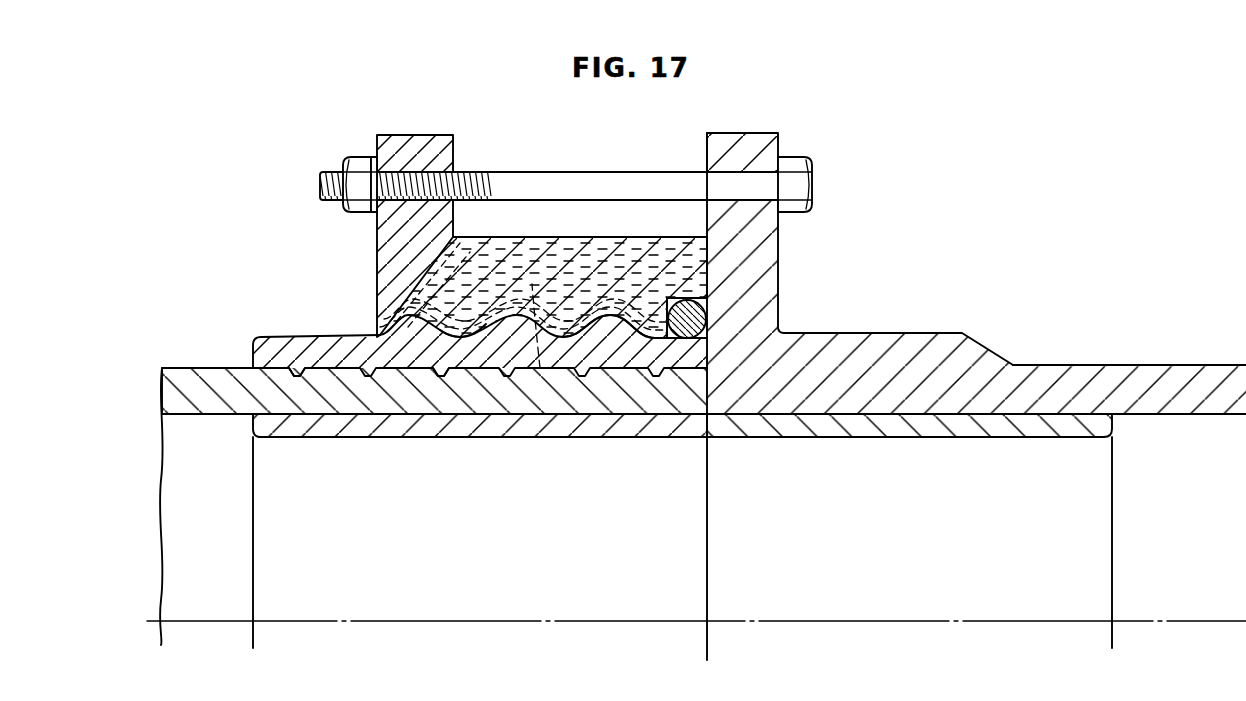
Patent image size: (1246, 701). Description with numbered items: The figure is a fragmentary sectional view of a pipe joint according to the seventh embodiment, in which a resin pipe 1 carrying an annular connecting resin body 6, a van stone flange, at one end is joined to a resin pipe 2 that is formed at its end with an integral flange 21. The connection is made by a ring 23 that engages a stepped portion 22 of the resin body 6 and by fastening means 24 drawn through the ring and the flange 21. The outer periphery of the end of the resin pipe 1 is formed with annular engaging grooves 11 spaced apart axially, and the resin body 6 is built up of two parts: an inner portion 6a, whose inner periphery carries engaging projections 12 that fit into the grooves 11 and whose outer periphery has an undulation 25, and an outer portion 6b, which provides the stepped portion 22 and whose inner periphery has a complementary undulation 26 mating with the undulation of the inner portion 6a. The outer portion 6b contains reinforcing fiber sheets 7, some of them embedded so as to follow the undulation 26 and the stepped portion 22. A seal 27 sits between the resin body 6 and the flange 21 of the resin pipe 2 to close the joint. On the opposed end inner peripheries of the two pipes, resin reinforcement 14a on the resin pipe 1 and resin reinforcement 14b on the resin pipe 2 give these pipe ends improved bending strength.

The resin pipe 1 is at (187, 385).
The resin pipe 2 is at (1182, 392).
The connecting resin body 6 is at (290, 248).
The inner portion 6a is at (378, 352).
The outer portion 6b is at (468, 270).
The reinforcing fiber sheets 7 is at (571, 305).
The annular engaging grooves 11 is at (357, 370).
The engaging projections 12 is at (303, 377).
The resin reinforcement 14a is at (303, 437).
The resin reinforcement 14b is at (930, 425).
The flange 21 is at (763, 252).
The stepped portion 22 is at (452, 167).
The ring 23 is at (417, 152).
The fastening means 24 is at (336, 166).
The undulation 25 is at (474, 335).
The undulation 26 is at (609, 318).
The seal 27 is at (708, 317).